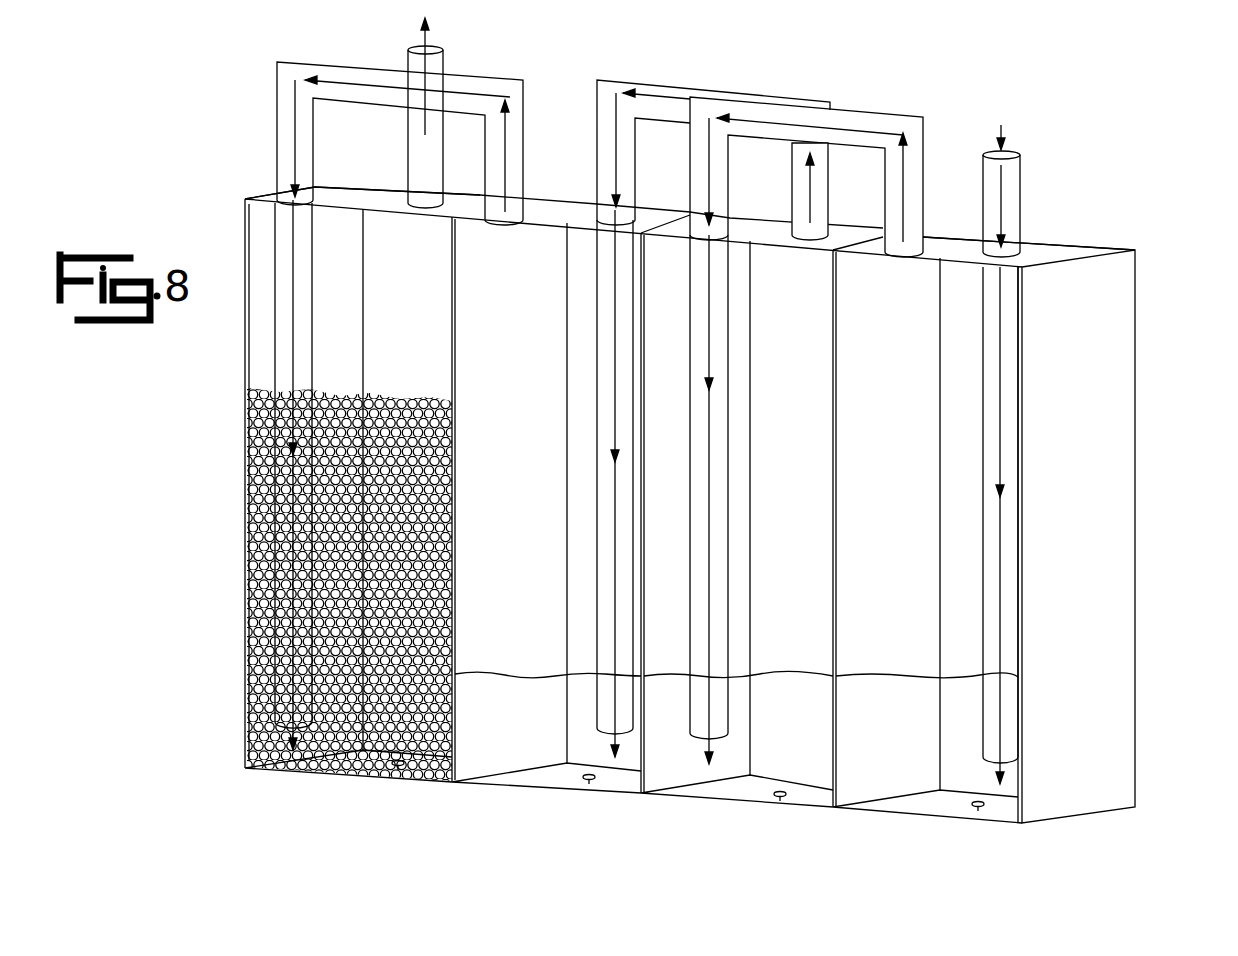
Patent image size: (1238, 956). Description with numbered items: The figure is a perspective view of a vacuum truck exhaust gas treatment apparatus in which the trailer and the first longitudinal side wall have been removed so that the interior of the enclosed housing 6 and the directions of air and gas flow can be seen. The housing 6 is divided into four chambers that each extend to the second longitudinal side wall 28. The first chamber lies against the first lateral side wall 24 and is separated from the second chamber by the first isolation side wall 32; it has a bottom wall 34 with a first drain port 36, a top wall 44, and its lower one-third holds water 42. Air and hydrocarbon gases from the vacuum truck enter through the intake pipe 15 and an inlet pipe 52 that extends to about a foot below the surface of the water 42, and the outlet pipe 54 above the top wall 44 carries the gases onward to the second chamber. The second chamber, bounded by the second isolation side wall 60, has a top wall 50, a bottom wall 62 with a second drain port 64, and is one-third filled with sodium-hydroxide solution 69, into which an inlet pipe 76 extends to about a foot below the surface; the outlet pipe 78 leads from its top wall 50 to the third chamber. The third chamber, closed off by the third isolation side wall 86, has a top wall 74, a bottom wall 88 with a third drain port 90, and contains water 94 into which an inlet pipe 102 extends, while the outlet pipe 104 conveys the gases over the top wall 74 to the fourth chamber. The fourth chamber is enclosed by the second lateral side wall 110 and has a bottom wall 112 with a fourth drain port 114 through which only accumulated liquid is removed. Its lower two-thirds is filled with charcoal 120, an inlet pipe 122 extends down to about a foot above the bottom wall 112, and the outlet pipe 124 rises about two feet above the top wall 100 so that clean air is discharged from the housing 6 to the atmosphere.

The enclosed housing 6 is at (1148, 240).
The intake pipe 15 is at (1013, 209).
The first lateral side wall 24 is at (1130, 352).
The second longitudinal side wall 28 is at (380, 285).
The first isolation side wall 32 is at (850, 570).
The bottom wall 34 is at (938, 805).
The first drain port 36 is at (975, 812).
The water 42 is at (866, 673).
The top wall 44 is at (1057, 247).
The top wall 50 is at (850, 237).
The inlet pipe 52 is at (990, 400).
The outlet pipe 54 is at (920, 132).
The second isolation side wall 60 is at (748, 501).
The bottom wall 62 is at (737, 797).
The second drain port 64 is at (782, 803).
The sodium-hydroxide solution 69 is at (764, 673).
The top wall 74 is at (583, 214).
The inlet pipe 76 is at (700, 592).
The outlet pipe 78 is at (656, 90).
The third isolation side wall 86 is at (468, 289).
The bottom wall 88 is at (558, 781).
The third drain port 90 is at (590, 786).
The water 94 is at (478, 672).
The top wall 100 is at (345, 192).
The inlet pipe 102 is at (600, 392).
The outlet pipe 104 is at (500, 82).
The second lateral side wall 110 is at (245, 381).
The bottom wall 112 is at (385, 770).
The fourth drain port 114 is at (398, 772).
The charcoal 120 is at (390, 390).
The inlet pipe 122 is at (300, 388).
The outlet pipe 124 is at (445, 64).